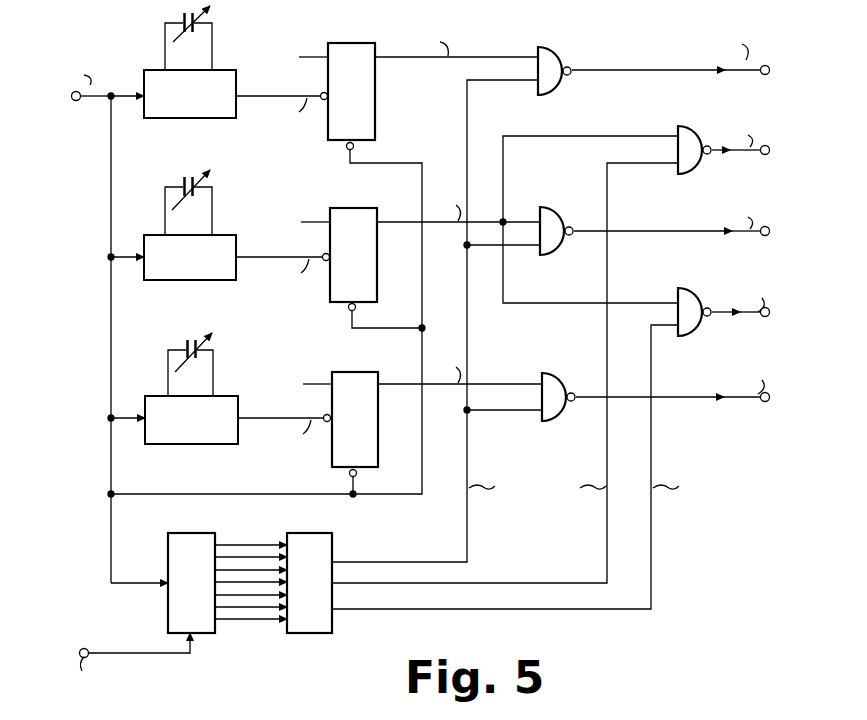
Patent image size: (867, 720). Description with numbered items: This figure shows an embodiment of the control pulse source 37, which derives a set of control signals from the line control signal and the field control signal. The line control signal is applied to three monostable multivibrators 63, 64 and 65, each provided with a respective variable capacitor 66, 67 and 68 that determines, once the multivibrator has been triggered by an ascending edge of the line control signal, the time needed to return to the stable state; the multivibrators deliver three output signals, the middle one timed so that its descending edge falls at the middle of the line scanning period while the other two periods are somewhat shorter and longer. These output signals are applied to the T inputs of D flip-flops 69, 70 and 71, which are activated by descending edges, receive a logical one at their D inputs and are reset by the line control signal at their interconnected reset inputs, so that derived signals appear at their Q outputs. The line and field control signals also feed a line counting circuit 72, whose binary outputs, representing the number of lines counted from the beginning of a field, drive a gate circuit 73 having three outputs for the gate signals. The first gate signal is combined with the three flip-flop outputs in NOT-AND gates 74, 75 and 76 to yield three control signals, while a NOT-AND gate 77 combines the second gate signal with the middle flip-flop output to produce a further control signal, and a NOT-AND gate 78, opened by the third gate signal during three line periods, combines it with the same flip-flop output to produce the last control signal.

The control pulse source 37 is at (104, 305).
The monostable multivibrator 63 is at (192, 118).
The monostable multivibrator 64 is at (190, 281).
The monostable multivibrator 65 is at (182, 444).
The variable capacitor 66 is at (188, 13).
The variable capacitor 67 is at (180, 184).
The variable capacitor 68 is at (190, 340).
The D flip-flop 69 is at (324, 133).
The D flip-flop 70 is at (326, 304).
The D flip-flop 71 is at (326, 451).
The line counting circuit 72 is at (212, 532).
The gate circuit 73 is at (330, 532).
The NOT-AND gate 74 is at (559, 52).
The NOT-AND gate 75 is at (558, 208).
The NOT-AND gate 76 is at (564, 374).
The NOT-AND gate 77 is at (683, 124).
The NOT-AND gate 78 is at (695, 286).